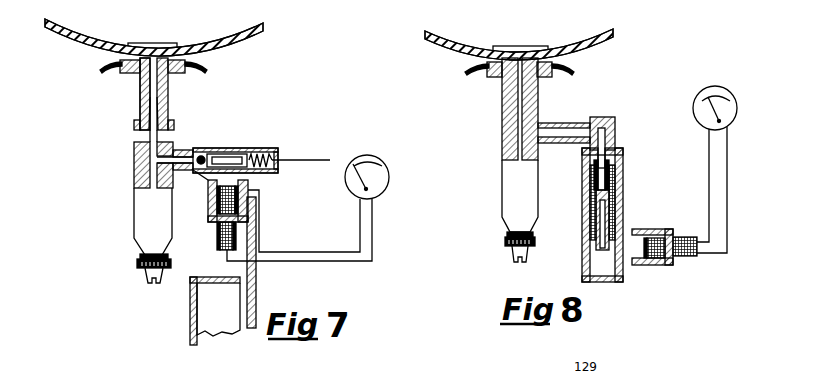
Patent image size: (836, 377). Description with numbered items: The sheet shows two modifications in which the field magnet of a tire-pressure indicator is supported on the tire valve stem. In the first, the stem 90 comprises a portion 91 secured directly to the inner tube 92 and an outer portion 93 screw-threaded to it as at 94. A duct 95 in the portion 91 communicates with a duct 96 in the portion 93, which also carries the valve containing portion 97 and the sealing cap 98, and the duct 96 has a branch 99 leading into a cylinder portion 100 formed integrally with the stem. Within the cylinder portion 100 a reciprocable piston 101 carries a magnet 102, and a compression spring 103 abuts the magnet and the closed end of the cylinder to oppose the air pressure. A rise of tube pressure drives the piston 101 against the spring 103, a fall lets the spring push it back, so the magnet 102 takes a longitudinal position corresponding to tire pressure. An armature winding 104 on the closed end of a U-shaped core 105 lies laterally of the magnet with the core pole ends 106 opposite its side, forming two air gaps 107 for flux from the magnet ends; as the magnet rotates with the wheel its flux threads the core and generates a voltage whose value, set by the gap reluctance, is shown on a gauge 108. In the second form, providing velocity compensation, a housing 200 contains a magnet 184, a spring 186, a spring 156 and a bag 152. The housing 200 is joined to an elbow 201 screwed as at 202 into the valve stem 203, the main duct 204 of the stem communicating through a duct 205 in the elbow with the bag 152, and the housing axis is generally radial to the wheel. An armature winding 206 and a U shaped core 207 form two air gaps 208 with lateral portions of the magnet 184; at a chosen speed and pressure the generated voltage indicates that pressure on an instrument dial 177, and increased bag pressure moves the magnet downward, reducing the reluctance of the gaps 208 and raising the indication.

In FIG. 7, the stem 90 is at (170, 104).
In FIG. 7, the stem portion 91 is at (140, 89).
In FIG. 7, the inner tube 92 is at (237, 45).
In FIG. 7, the outer stem portion 93 is at (134, 158).
In FIG. 7, the screw-threaded connection 94 is at (134, 128).
In FIG. 7, the duct 95 is at (158, 116).
In FIG. 7, the duct 96 is at (134, 170).
In FIG. 7, the valve containing portion 97 is at (150, 228).
In FIG. 7, the sealing cap 98 is at (150, 283).
In FIG. 7, the duct branch 99 is at (172, 156).
In FIG. 7, the cylinder portion 100 is at (232, 151).
In FIG. 7, the piston 101 is at (205, 172).
In FIG. 7, the magnet 102 is at (266, 152).
In FIG. 7, the compression spring 103 is at (314, 160).
In FIG. 7, the armature winding 104 is at (218, 242).
In FIG. 7, the U-shaped core 105 is at (248, 190).
In FIG. 7, the core pole ends 106 is at (220, 186).
In FIG. 7, the air gaps 107 is at (248, 182).
In FIG. 7, the gauge 108 is at (383, 183).
In FIG. 8, the bag 152 is at (590, 172).
In FIG. 8, the spring 156 is at (590, 191).
In FIG. 8, the instrument dial 177 is at (731, 118).
In FIG. 8, the magnet 184 is at (600, 238).
In FIG. 8, the spring 186 is at (596, 213).
In FIG. 8, the housing 200 is at (626, 190).
In FIG. 8, the elbow 201 is at (583, 120).
In FIG. 8, the screw connection 202 is at (538, 104).
In FIG. 8, the valve stem 203 is at (502, 124).
In FIG. 8, the main duct 204 is at (502, 103).
In FIG. 8, the duct 205 is at (612, 118).
In FIG. 8, the armature winding 206 is at (688, 262).
In FIG. 8, the U-shaped core 207 is at (652, 268).
In FIG. 8, the air gaps 208 is at (635, 228).